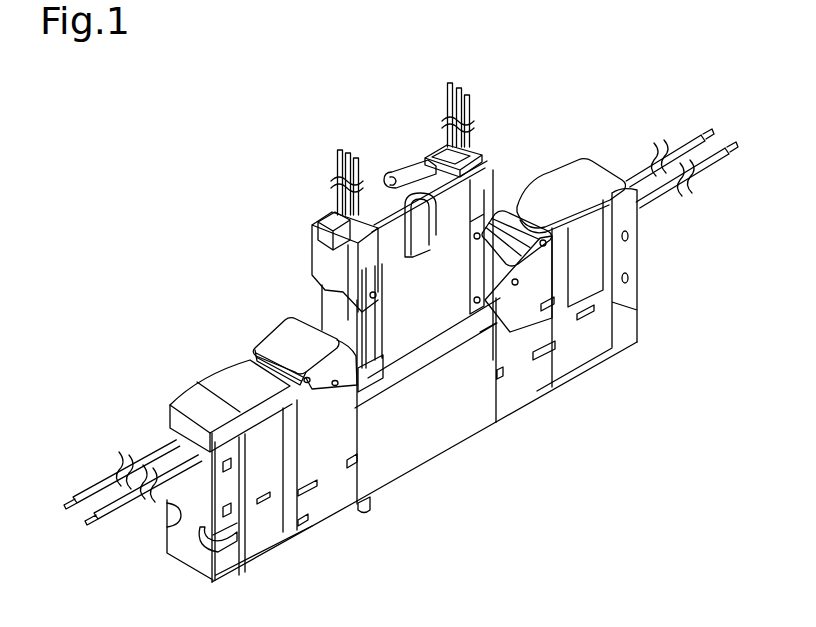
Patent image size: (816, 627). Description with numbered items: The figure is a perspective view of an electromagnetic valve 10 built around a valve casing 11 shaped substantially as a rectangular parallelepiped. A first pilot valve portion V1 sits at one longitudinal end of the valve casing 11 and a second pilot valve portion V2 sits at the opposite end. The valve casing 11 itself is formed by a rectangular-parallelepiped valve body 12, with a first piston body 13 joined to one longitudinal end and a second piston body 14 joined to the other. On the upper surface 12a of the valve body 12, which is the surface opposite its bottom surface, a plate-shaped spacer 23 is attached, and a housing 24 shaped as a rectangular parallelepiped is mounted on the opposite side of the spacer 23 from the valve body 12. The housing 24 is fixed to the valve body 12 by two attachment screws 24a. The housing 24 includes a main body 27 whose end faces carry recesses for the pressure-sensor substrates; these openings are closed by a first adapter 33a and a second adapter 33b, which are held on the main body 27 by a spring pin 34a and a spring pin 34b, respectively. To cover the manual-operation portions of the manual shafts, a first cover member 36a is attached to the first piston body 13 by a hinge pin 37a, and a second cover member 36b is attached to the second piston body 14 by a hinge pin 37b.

The electromagnetic valve 10 is at (148, 194).
The valve casing 11 is at (466, 445).
The valve body 12 is at (407, 460).
The upper surface 12a is at (420, 368).
The first piston body 13 is at (532, 382).
The second piston body 14 is at (328, 505).
The spacer 23 is at (470, 338).
The housing 24 is at (348, 205).
The attachment screws 24a is at (398, 183).
The main body 27 is at (410, 170).
The first adapter 33a is at (494, 165).
The second adapter 33b is at (307, 225).
The spring pin 34a is at (468, 266).
The spring pin 34b is at (376, 296).
The first cover member 36a is at (505, 216).
The second cover member 36b is at (270, 340).
The hinge pin 37a is at (553, 256).
The hinge pin 37b is at (310, 398).
The first pilot valve portion V1 is at (590, 166).
The second pilot valve portion V2 is at (205, 392).